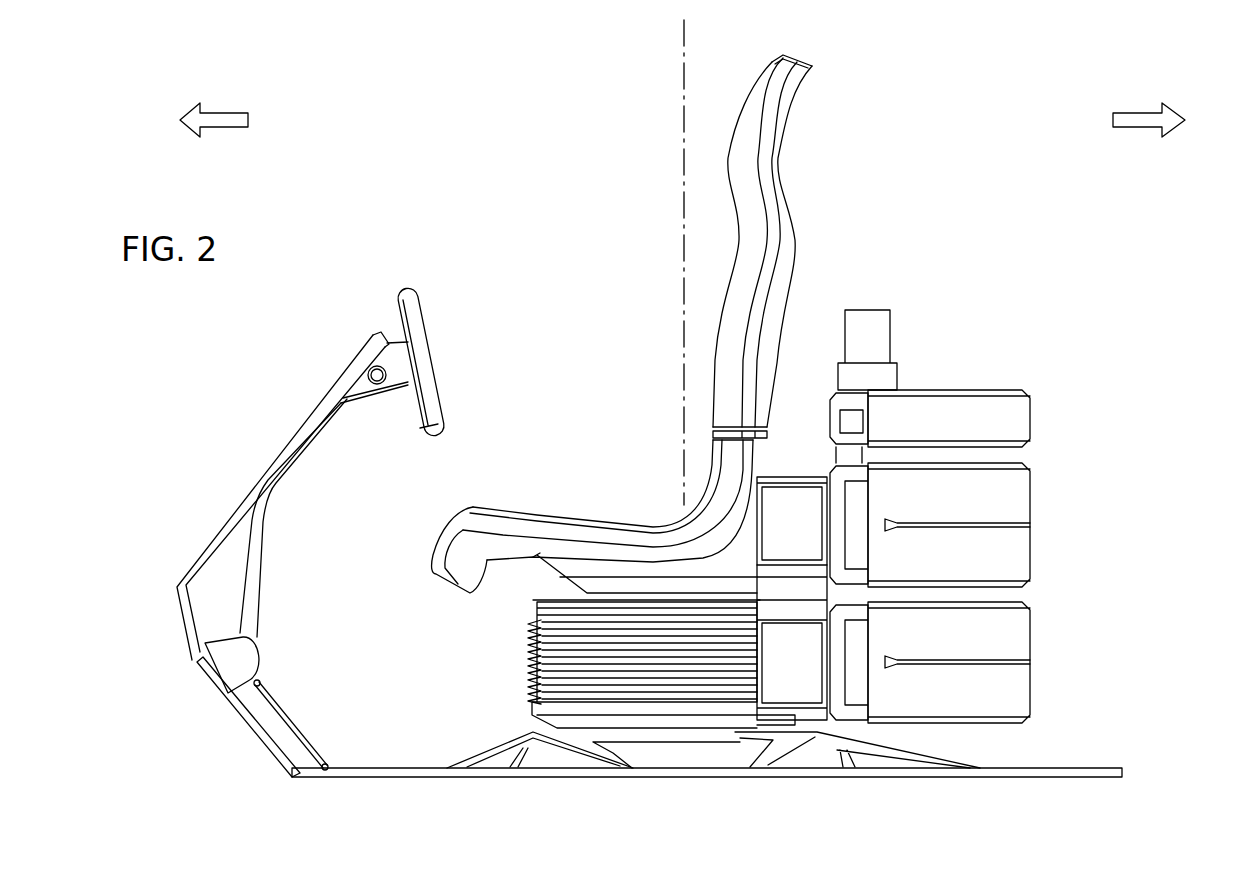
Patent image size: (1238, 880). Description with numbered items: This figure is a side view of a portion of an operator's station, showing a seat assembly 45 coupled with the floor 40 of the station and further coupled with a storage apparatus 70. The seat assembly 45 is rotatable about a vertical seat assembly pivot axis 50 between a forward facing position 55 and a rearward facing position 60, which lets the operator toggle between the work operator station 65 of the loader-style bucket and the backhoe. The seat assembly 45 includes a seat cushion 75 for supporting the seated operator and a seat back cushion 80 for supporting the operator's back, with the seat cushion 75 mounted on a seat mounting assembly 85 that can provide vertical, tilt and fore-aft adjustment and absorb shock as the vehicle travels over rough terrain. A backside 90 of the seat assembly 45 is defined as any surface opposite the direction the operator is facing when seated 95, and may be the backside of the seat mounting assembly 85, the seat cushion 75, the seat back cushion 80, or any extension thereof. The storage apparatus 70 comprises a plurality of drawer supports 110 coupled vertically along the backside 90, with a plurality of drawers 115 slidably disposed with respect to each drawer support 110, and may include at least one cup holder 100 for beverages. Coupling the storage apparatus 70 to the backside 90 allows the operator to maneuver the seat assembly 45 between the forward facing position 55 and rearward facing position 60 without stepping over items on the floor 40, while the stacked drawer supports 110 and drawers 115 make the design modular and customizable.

The floor 40 is at (547, 775).
The seat assembly 45 is at (481, 124).
The seat assembly pivot axis 50 is at (678, 112).
The forward facing position 55 is at (240, 118).
The rearward facing position 60 is at (1125, 120).
The work operator station 65 is at (372, 345).
The storage apparatus 70 is at (1012, 328).
The seat cushion 75 is at (555, 505).
The seat back cushion 80 is at (775, 68).
The seat mounting assembly 85 is at (524, 663).
The backside 90 is at (790, 262).
The direction the operator is facing when seated 95 is at (1152, 120).
The cup holder 100 is at (865, 313).
The drawer support 110 is at (790, 475).
The drawer 115 is at (1010, 418).